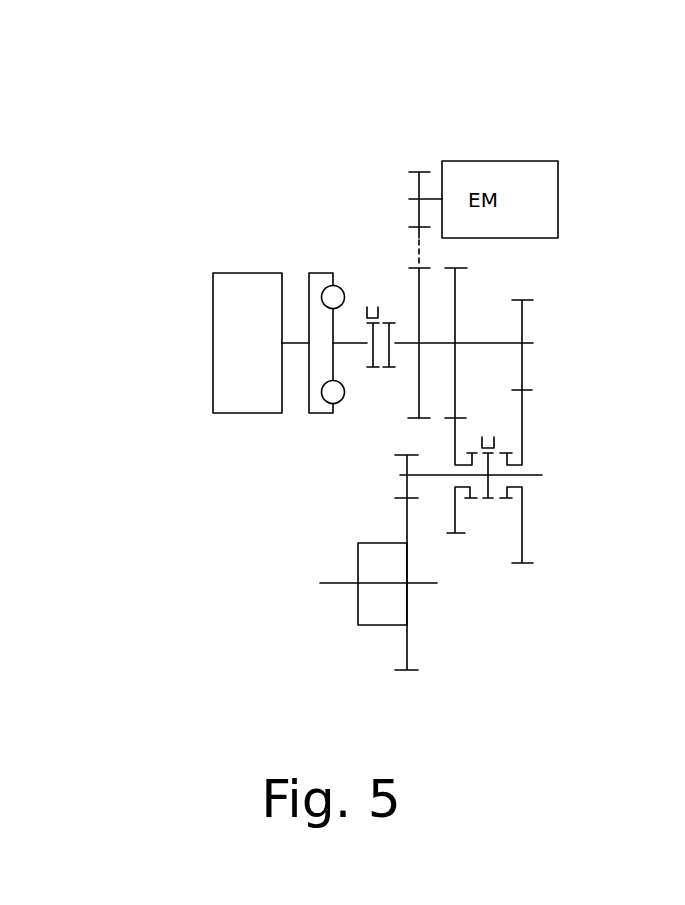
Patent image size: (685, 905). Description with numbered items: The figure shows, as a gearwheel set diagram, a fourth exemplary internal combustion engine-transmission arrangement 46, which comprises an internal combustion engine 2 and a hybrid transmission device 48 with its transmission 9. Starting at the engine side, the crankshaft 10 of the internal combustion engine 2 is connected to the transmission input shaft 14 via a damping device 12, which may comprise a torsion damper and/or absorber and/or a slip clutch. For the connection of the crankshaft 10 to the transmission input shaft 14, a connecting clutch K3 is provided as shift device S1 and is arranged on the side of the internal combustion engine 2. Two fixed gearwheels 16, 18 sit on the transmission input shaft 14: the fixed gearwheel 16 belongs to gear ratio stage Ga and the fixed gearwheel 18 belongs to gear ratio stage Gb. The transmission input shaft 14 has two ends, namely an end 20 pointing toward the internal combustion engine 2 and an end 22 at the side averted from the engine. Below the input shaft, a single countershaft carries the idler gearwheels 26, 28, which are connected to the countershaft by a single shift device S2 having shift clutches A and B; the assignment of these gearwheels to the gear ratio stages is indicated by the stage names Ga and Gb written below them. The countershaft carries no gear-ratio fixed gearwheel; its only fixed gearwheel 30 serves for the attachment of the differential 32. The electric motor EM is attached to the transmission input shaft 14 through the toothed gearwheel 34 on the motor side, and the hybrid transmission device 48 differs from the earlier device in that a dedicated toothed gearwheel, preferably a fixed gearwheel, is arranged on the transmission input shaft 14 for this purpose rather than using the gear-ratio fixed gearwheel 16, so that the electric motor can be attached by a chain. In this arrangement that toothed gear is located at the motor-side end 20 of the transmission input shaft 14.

The internal combustion engine 2 is at (213, 320).
The transmission 9 is at (611, 434).
The crankshaft 10 is at (292, 346).
The damping device 12 is at (318, 272).
The transmission input shaft 14 is at (478, 342).
The fixed gearwheel 16 is at (457, 290).
The fixed gearwheel 18 is at (525, 318).
The end 20 is at (407, 352).
The end 22 is at (541, 351).
The idler gearwheel 26 is at (452, 510).
The idler gearwheel 28 is at (523, 508).
The fixed gearwheel 30 is at (400, 470).
The differential 32 is at (358, 593).
The toothed gearwheel 34 is at (418, 183).
The internal combustion engine-transmission arrangement 46 is at (278, 126).
The hybrid transmission device 48 is at (331, 194).
The connecting clutch K3 is at (374, 320).
The shift device S1 is at (381, 382).
The shift device S2 is at (489, 512).
The gear ratio stage Ga is at (457, 528).
The gear ratio stage Gb is at (522, 543).